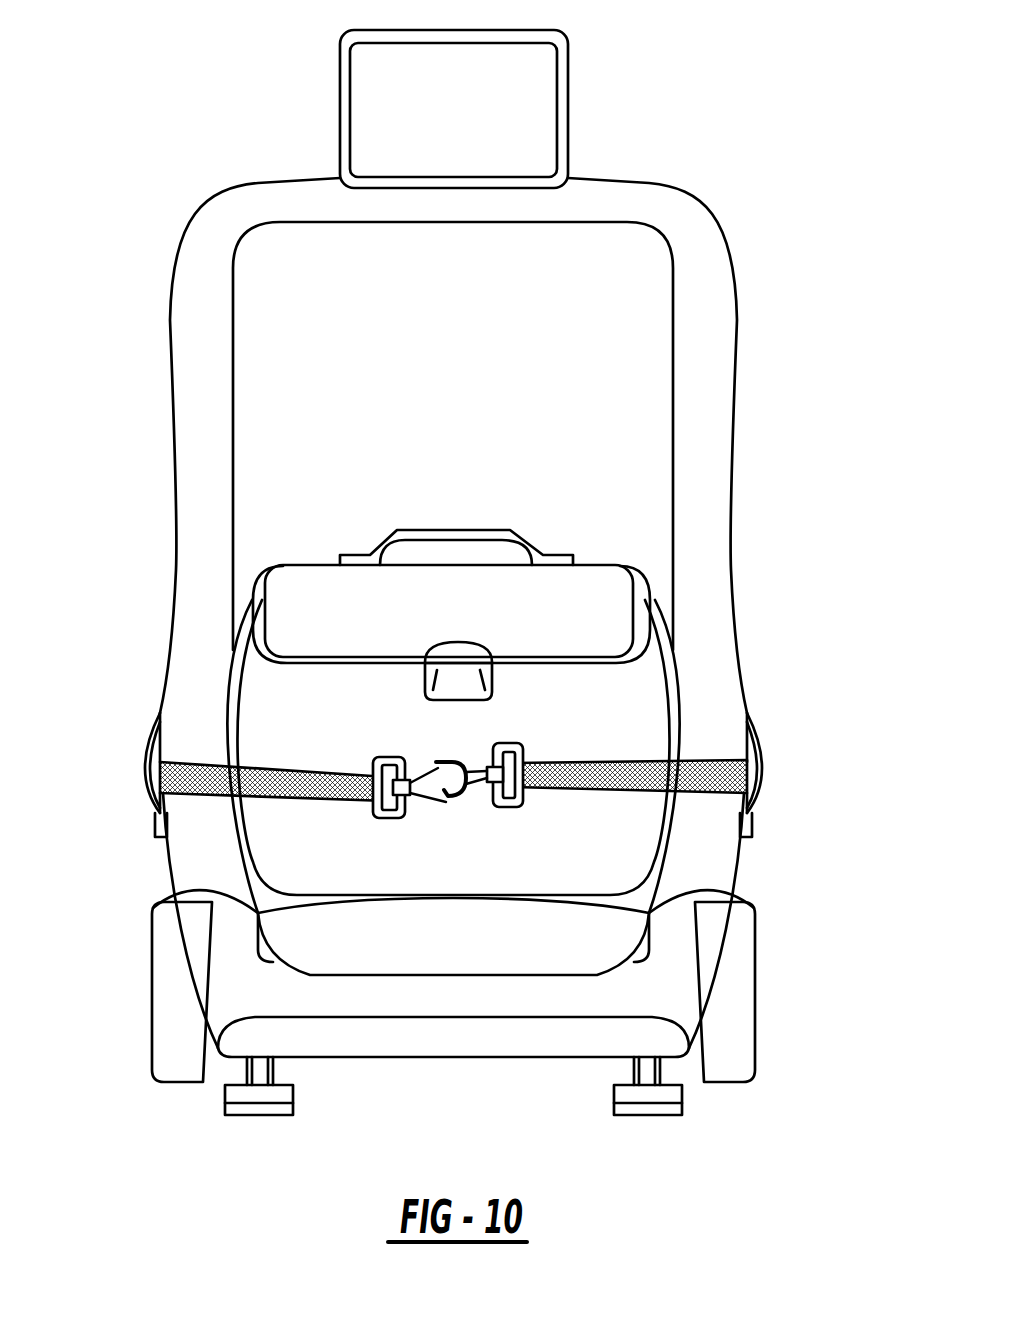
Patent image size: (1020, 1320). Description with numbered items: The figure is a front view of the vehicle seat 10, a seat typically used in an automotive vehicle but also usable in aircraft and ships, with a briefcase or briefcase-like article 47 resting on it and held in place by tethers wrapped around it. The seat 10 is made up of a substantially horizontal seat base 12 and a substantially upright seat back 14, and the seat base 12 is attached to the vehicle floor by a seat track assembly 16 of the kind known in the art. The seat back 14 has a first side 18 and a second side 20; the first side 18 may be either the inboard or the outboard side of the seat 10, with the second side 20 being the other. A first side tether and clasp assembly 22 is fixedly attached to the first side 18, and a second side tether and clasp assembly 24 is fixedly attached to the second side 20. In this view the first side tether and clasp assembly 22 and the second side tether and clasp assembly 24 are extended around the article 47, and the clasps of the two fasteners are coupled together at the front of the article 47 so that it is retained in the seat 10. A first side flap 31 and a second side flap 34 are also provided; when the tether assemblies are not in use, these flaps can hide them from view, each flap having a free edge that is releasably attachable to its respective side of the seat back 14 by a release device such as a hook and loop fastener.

The seat 10 is at (814, 127).
The seat base 12 is at (577, 943).
The seat back 14 is at (213, 515).
The seat track assembly 16 is at (287, 1097).
The first side 18 is at (192, 405).
The second side 20 is at (715, 277).
The first side tether and clasp assembly 22 is at (205, 782).
The second side tether and clasp assembly 24 is at (697, 782).
The first side flap 31 is at (147, 752).
The second side flap 34 is at (794, 775).
The briefcase or briefcase-like article 47 is at (598, 615).